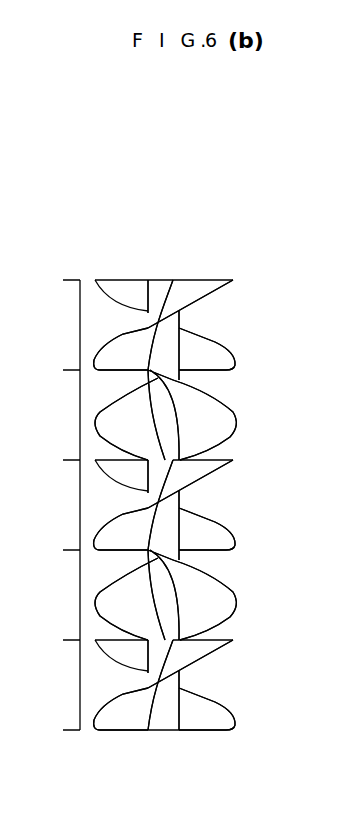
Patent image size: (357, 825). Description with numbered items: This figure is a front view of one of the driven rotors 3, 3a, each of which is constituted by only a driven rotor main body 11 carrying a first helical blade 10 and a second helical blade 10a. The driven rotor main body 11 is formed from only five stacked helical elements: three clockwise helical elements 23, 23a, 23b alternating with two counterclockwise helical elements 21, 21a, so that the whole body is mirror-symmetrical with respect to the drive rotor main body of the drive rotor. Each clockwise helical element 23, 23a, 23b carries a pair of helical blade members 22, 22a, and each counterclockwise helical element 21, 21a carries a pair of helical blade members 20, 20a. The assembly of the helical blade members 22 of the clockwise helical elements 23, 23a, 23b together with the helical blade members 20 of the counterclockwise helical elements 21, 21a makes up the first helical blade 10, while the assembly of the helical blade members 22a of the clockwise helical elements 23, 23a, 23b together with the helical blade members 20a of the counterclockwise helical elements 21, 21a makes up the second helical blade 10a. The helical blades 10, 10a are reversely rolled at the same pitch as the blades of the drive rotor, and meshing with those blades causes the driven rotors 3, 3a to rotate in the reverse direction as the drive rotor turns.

The driven rotor 3 is at (150, 262).
The driven rotor 3a is at (152, 430).
The first helical blade 10 is at (166, 251).
The second helical blade 10a is at (120, 266).
The driven rotor main body 11 is at (43, 312).
The helical blade member 20 is at (123, 415).
The helical blade member 20a is at (212, 423).
The counterclockwise helical element 21 is at (139, 415).
The counterclockwise helical element 21a is at (135, 595).
The helical blade member 22 is at (208, 289).
The helical blade member 22a is at (213, 358).
The clockwise helical element 23 is at (140, 296).
The clockwise helical element 23a is at (135, 505).
The clockwise helical element 23b is at (135, 685).